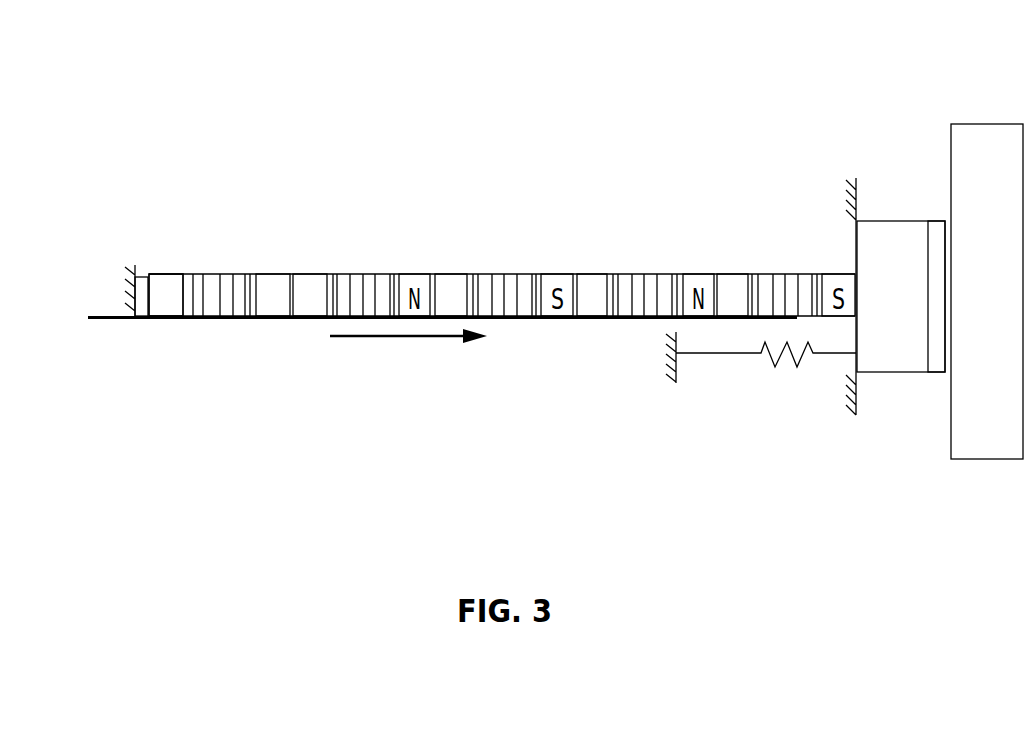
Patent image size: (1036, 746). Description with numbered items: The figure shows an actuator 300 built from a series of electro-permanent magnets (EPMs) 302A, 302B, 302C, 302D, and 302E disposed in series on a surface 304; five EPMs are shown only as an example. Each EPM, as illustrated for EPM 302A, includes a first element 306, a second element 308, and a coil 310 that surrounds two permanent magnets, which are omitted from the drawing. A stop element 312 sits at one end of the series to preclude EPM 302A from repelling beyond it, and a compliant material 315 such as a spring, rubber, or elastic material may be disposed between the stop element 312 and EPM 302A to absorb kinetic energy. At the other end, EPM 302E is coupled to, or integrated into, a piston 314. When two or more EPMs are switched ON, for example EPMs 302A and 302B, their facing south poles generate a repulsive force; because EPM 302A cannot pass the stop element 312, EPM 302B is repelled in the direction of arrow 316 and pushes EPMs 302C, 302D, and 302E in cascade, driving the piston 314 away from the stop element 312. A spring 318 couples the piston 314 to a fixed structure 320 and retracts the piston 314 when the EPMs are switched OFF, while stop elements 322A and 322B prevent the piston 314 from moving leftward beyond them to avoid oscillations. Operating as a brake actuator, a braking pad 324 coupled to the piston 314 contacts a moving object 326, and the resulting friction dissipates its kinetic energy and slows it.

The actuator 300 is at (338, 105).
The EPM 302A is at (152, 269).
The EPM 302B is at (309, 269).
The EPM 302C is at (445, 269).
The EPM 302D is at (589, 269).
The EPM 302E is at (732, 269).
The surface 304 is at (100, 320).
The first element 306 is at (170, 309).
The second element 308 is at (270, 273).
The coil 310 is at (217, 285).
The stop element 312 is at (130, 290).
The piston 314 is at (890, 373).
The compliant material 315 is at (140, 309).
The arrow 316 is at (397, 338).
The spring 318 is at (767, 353).
The fixed structure 320 is at (673, 369).
The stop element 322A is at (847, 193).
The stop element 322B is at (850, 397).
The braking pad 324 is at (935, 373).
The moving object 326 is at (980, 460).